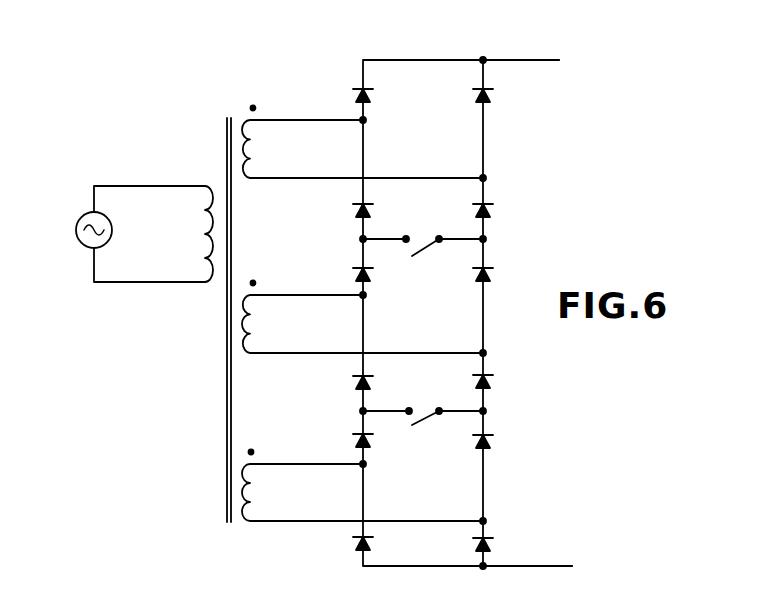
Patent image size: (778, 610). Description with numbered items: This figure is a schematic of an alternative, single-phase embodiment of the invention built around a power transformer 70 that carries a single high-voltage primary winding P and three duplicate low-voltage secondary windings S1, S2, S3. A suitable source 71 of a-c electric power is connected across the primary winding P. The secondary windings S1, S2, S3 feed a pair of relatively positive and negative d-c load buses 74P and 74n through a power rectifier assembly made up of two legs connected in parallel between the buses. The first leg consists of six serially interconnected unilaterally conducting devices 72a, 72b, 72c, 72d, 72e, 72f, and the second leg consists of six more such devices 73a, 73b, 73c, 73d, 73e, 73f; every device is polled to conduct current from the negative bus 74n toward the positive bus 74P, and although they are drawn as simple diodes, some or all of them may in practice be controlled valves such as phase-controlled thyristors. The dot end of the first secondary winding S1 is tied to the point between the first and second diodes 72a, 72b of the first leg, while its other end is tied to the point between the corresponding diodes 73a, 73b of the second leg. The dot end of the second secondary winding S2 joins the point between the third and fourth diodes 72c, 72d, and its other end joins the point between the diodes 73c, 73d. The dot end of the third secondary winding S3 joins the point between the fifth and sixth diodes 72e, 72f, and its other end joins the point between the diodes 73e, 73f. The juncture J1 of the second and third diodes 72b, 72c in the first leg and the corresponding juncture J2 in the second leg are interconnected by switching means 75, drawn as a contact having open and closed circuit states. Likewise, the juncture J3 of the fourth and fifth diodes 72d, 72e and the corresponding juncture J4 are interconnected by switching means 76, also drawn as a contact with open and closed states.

The power transformer 70 is at (290, 315).
The source of a-c electric power 71 is at (76, 220).
The primary winding P is at (196, 232).
The secondary winding S1 is at (248, 150).
The secondary winding S2 is at (250, 323).
The secondary winding S3 is at (252, 491).
The unilaterally conducting device 72a is at (376, 98).
The unilaterally conducting device 72b is at (376, 214).
The unilaterally conducting device 72c is at (378, 279).
The unilaterally conducting device 72d is at (374, 384).
The unilaterally conducting device 72e is at (372, 440).
The unilaterally conducting device 72f is at (376, 546).
The unilaterally conducting device 73a is at (497, 100).
The unilaterally conducting device 73b is at (497, 214).
The unilaterally conducting device 73c is at (486, 290).
The unilaterally conducting device 73d is at (497, 382).
The unilaterally conducting device 73e is at (497, 443).
The unilaterally conducting device 73f is at (497, 548).
The positive d-c load bus 74P is at (541, 55).
The negative d-c load bus 74n is at (557, 564).
The switching means 75 is at (430, 250).
The switching means 76 is at (428, 420).
The juncture J1 is at (356, 240).
The juncture J2 is at (490, 244).
The juncture J3 is at (358, 411).
The juncture J4 is at (490, 415).